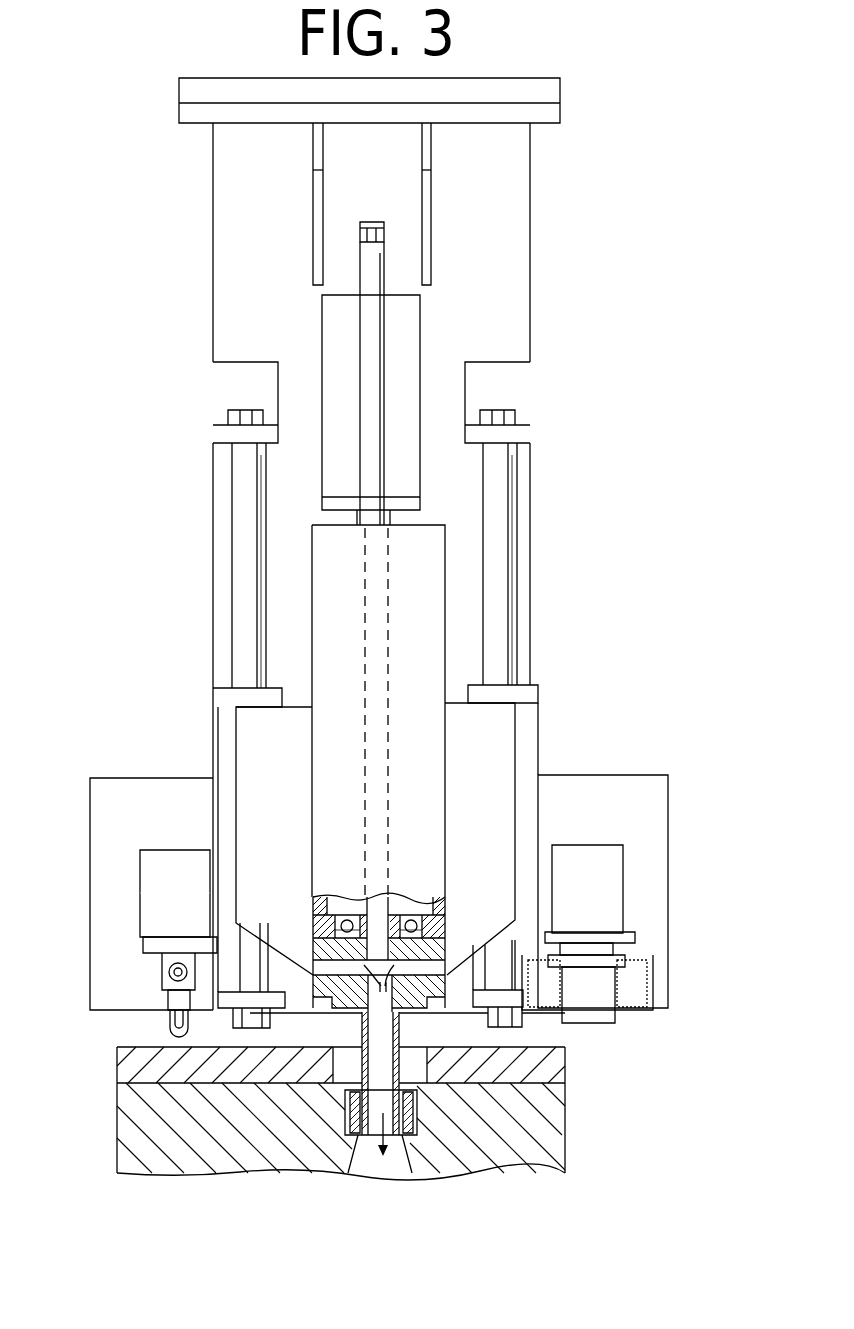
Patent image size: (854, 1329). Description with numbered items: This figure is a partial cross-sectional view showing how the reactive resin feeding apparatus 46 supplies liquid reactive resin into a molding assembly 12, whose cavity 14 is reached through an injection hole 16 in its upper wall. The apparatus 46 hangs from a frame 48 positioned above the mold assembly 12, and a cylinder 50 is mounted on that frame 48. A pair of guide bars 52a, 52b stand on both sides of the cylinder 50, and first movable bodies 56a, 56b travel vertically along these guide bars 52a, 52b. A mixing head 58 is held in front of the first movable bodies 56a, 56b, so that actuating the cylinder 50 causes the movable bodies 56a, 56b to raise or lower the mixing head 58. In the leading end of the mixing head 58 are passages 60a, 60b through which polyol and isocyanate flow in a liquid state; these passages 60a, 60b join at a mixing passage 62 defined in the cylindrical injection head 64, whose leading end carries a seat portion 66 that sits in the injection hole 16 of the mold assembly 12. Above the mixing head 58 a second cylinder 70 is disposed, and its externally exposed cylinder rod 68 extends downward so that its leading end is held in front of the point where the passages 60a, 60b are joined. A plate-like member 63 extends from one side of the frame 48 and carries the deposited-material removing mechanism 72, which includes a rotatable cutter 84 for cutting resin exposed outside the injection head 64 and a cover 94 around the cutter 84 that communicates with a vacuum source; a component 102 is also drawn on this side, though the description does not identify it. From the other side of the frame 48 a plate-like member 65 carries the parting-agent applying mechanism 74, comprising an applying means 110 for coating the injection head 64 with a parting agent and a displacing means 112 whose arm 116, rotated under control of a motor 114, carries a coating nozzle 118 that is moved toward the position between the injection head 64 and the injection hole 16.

The molding assembly 12 is at (148, 1118).
The cavity 14 is at (383, 1165).
The injection hole 16 is at (417, 1090).
The reactive resin feeding apparatus 46 is at (588, 303).
The frame 48 is at (230, 278).
The cylinder 50 is at (408, 330).
The guide bar 52a is at (500, 512).
The guide bar 52b is at (240, 517).
The first movable body 56a is at (500, 732).
The first movable body 56b is at (255, 738).
The mixing head 58 is at (450, 915).
The passage 60a is at (447, 963).
The passage 60b is at (313, 972).
The mixing passage 62 is at (387, 1017).
The plate-like member 63 is at (595, 778).
The injection head 64 is at (354, 1068).
The plate-like member 65 is at (170, 785).
The seat portion 66 is at (357, 1137).
The cylinder rod 68 is at (375, 473).
The cylinder 70 is at (430, 598).
The deposited-material removing mechanism 72 is at (643, 826).
The parting-agent applying mechanism 74 is at (158, 830).
The rotatable cutter 84 is at (633, 943).
The cover 94 is at (652, 975).
The actuator 102 is at (612, 883).
The applying means 110 is at (152, 973).
The displacing means 112 is at (135, 885).
The motor 114 is at (148, 905).
The arm 116 is at (170, 1030).
The coating nozzle 118 is at (165, 995).